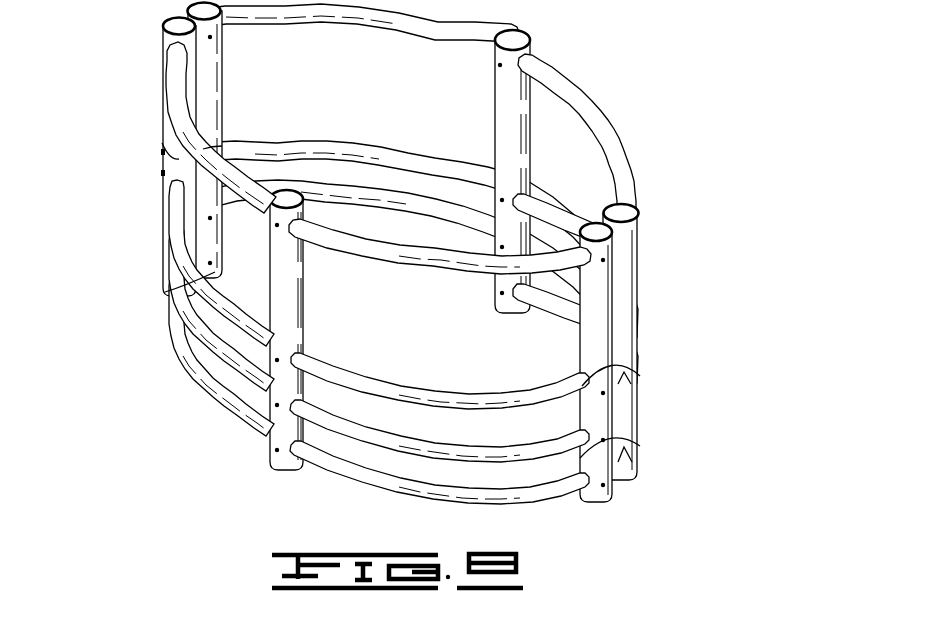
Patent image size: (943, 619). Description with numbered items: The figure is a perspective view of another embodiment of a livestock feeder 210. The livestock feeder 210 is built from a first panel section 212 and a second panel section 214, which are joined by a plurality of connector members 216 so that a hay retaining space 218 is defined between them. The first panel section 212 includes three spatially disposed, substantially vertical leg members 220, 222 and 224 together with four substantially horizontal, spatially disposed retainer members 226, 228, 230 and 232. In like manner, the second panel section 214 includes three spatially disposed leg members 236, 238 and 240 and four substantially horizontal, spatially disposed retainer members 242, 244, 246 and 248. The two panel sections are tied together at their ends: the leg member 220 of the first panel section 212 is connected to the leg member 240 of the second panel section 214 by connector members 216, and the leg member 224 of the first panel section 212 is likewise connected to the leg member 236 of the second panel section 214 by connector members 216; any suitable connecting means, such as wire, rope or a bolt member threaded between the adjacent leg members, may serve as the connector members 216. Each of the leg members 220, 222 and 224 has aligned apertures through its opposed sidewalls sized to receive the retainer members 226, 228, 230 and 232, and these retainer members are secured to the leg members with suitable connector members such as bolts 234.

The livestock feeder 210 is at (688, 70).
The first panel section 212 is at (356, 23).
The second panel section 214 is at (378, 182).
The connector members 216 is at (163, 167).
The hay retaining space 218 is at (359, 357).
The leg member 220 is at (638, 250).
The leg member 222 is at (492, 89).
The leg member 224 is at (232, 55).
The retainer member 226 is at (553, 75).
The retainer member 228 is at (322, 140).
The retainer member 230 is at (407, 197).
The retainer member 232 is at (545, 305).
The bolts 234 is at (641, 233).
The leg member 236 is at (156, 110).
The leg member 238 is at (262, 462).
The leg member 240 is at (591, 509).
The retainer member 242 is at (413, 268).
The retainer member 244 is at (379, 294).
The retainer member 246 is at (233, 363).
The retainer member 248 is at (416, 485).